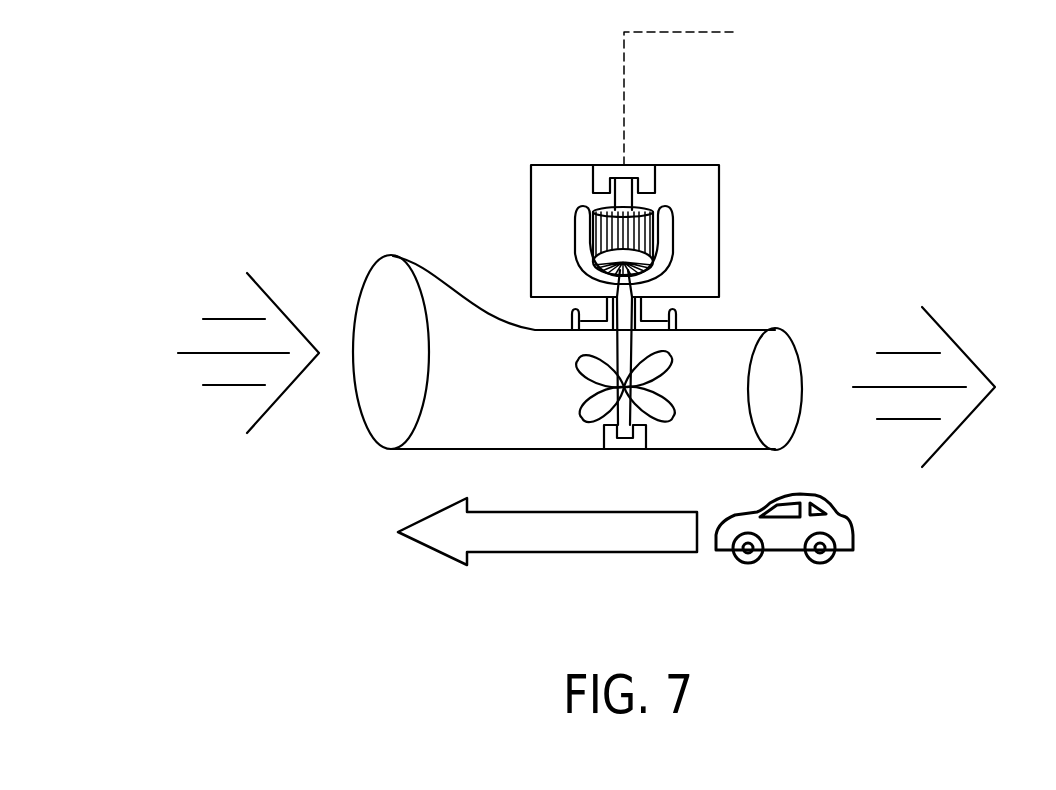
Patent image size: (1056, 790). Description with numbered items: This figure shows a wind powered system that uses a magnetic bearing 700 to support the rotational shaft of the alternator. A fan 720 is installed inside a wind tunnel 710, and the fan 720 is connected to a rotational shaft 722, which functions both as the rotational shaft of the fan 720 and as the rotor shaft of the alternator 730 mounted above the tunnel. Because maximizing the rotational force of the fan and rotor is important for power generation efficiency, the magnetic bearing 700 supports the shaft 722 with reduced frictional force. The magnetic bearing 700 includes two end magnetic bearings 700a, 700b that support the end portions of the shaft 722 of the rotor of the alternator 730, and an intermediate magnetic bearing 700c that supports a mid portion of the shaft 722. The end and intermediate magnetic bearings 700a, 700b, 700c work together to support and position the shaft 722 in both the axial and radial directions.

The magnetic bearing 700 is at (751, 307).
The end magnetic bearing 700a is at (655, 178).
The end magnetic bearing 700b is at (646, 433).
The intermediate magnetic bearing 700c is at (641, 305).
The wind tunnel 710 is at (427, 268).
The fan 720 is at (582, 378).
The rotational shaft 722 is at (617, 340).
The alternator 730 is at (568, 202).